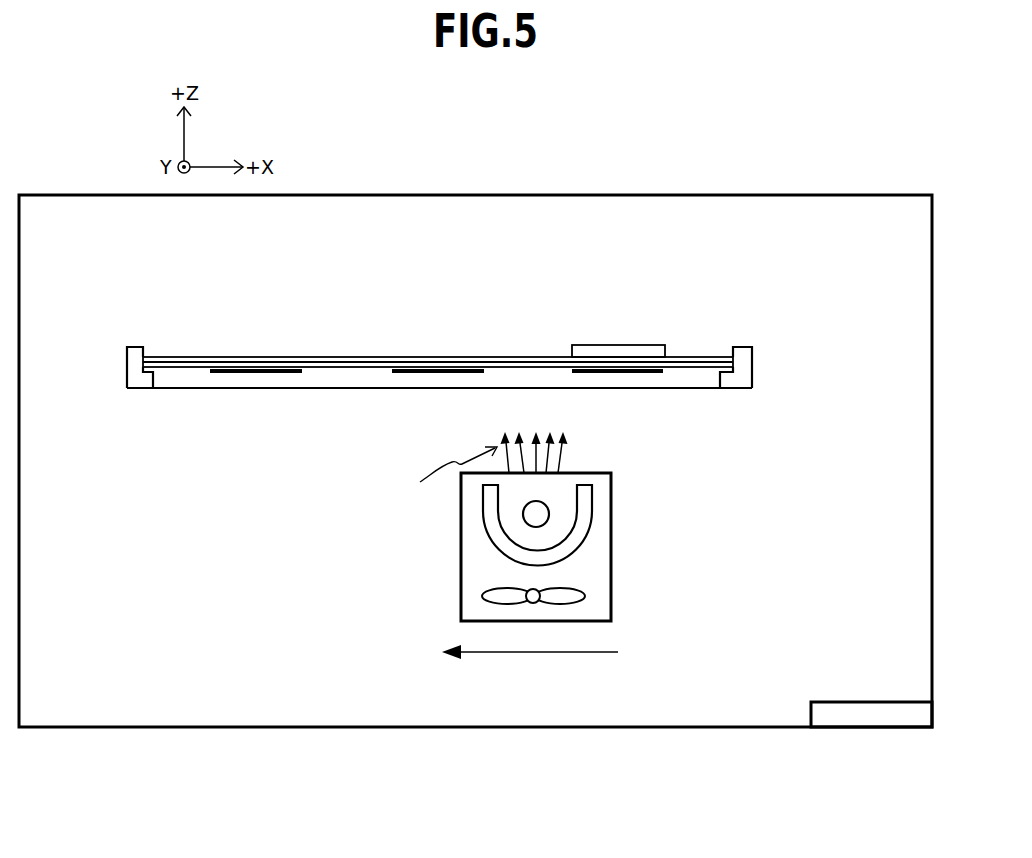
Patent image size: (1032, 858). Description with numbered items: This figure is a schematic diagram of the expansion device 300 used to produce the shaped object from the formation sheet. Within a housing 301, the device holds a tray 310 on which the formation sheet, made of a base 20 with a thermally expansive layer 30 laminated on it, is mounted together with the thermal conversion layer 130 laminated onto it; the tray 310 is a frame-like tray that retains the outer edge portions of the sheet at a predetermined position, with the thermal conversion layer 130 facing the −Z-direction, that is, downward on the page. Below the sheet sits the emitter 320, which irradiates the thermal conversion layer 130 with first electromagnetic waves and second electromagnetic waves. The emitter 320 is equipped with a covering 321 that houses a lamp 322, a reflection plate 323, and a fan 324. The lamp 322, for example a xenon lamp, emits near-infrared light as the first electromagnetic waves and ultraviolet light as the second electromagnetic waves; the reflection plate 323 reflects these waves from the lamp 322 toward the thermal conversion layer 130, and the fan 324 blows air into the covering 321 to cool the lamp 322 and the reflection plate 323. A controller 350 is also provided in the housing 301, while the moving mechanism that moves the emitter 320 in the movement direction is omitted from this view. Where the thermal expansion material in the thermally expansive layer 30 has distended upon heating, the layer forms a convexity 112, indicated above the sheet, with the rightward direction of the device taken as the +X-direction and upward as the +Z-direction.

The base 20 is at (185, 367).
The thermally expansive layer 30 is at (363, 361).
The convexity 112 is at (650, 345).
The thermal conversion layer 130 is at (218, 374).
The expansion device 300 is at (815, 132).
The housing 301 is at (652, 195).
The tray 310 is at (752, 348).
The emitter 320 is at (609, 550).
The covering 321 is at (611, 614).
The lamp 322 is at (549, 512).
The reflection plate 323 is at (578, 546).
The fan 324 is at (588, 590).
The controller 350 is at (842, 702).